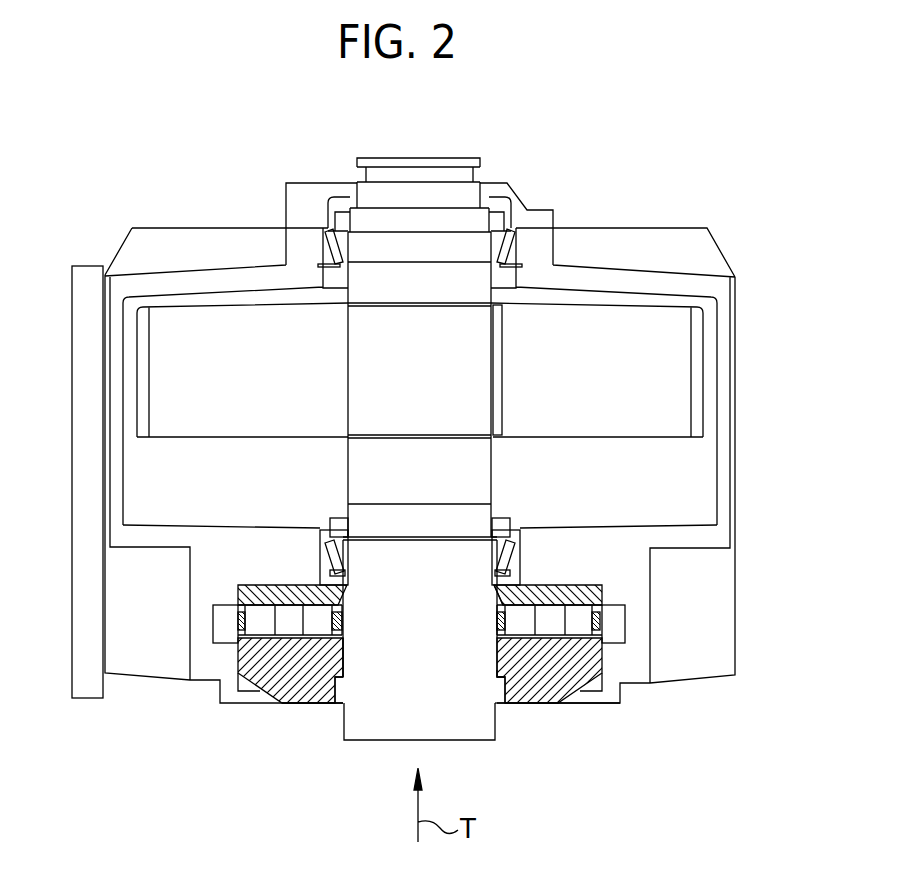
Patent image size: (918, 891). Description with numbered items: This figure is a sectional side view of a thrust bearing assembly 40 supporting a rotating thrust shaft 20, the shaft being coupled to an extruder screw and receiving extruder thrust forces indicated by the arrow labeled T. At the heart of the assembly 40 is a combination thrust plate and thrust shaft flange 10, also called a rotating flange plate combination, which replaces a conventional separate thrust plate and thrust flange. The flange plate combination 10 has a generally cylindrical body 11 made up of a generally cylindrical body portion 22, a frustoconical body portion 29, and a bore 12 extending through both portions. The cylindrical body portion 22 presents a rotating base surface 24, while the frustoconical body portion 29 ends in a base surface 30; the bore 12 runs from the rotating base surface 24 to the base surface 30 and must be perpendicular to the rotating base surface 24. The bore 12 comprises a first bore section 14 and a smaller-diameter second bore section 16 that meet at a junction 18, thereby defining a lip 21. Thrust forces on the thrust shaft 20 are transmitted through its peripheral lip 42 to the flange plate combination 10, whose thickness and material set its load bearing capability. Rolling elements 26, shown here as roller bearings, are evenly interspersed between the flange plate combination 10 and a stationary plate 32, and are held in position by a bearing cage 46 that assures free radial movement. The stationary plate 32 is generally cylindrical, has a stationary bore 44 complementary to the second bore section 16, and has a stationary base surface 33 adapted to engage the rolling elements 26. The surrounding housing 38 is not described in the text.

The combination thrust plate and thrust shaft flange 10 is at (551, 724).
The generally cylindrical body 11 is at (590, 657).
The bore 12 is at (383, 670).
The first bore section 14 is at (340, 696).
The second bore section 16 is at (343, 653).
The junction 18 is at (500, 695).
The thrust shaft 20 is at (359, 735).
The lip 21 is at (500, 679).
The generally cylindrical body portion 22 is at (238, 658).
The rotating base surface 24 is at (290, 633).
The rolling elements 26 is at (582, 617).
The frustoconical body portion 29 is at (590, 705).
The base surface 30 is at (303, 706).
The stationary plate 32 is at (555, 590).
The stationary base surface 33 is at (547, 602).
The housing 38 is at (737, 389).
The thrust bearing assembly 40 is at (210, 595).
The peripheral lip 42 is at (500, 706).
The stationary bore 44 is at (496, 598).
The bearing cage 46 is at (236, 620).